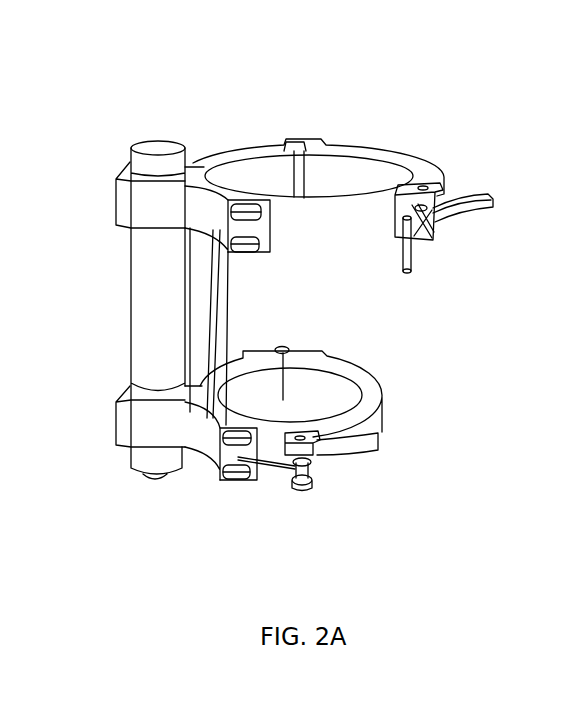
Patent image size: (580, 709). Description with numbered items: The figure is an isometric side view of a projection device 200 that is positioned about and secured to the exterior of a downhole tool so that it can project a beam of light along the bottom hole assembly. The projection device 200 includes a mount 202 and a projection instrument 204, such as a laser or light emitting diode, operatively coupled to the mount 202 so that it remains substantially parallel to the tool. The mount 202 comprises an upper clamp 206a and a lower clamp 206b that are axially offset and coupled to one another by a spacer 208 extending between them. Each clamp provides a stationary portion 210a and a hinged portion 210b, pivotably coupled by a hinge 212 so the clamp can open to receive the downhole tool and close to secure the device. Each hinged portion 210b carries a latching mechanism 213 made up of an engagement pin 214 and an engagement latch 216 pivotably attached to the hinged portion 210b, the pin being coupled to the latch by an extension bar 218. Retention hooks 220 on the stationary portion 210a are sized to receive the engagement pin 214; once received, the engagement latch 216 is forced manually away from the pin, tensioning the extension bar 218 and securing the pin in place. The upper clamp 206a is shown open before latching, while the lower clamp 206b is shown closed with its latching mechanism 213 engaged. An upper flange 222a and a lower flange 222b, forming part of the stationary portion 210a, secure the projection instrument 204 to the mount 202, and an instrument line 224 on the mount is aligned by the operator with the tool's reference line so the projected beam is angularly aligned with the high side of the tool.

The projection device 200 is at (167, 37).
The mount 202 is at (377, 132).
The projection instrument 204 is at (116, 282).
The upper clamp 206a is at (462, 150).
The lower clamp 206b is at (390, 370).
The spacer 208 is at (223, 320).
The stationary portion 210a is at (237, 140).
The hinged portion 210b is at (418, 162).
The hinge 212 is at (300, 140).
The latching mechanism 213 is at (512, 181).
The engagement pin 214 is at (408, 258).
The engagement latch 216 is at (490, 210).
The extension bar 218 is at (423, 237).
The retention hooks 220 is at (267, 247).
The upper flange 222a is at (120, 190).
The lower flange 222b is at (118, 413).
The instrument line 224 is at (196, 141).